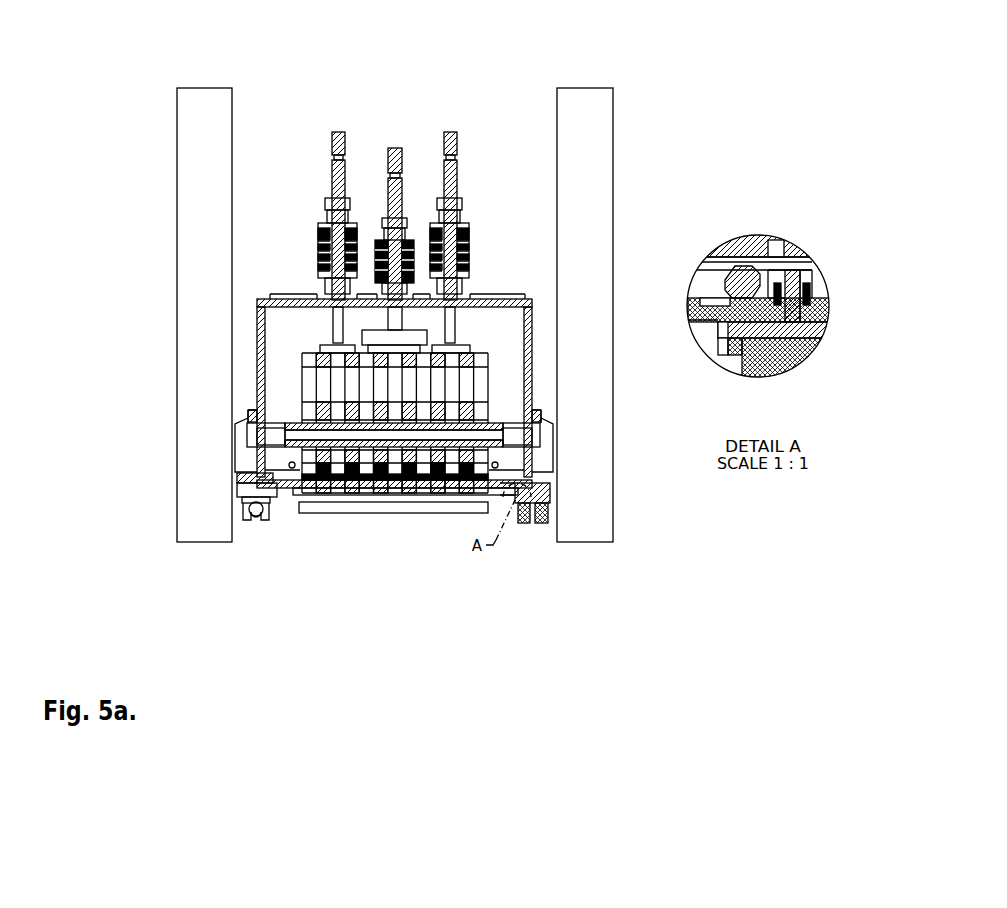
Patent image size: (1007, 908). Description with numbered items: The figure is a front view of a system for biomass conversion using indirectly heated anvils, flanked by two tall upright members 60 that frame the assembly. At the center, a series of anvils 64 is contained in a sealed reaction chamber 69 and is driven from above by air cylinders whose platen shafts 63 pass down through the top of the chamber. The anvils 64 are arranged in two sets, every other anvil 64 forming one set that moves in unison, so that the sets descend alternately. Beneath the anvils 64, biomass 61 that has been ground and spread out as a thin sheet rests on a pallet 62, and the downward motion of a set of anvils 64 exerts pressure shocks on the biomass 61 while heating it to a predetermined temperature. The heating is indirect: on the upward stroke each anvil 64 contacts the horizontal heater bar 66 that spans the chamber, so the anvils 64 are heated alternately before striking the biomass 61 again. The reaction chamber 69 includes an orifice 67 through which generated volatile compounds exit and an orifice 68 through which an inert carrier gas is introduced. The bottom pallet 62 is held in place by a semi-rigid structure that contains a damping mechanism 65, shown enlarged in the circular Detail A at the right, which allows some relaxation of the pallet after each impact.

The support column 60 is at (610, 170).
The biomass 61 is at (297, 493).
The pallet 62 is at (373, 507).
The platen shafts 63 is at (332, 132).
The anvils 64 is at (480, 355).
The damping mechanism 65 is at (818, 335).
The heater bar 66 is at (297, 417).
The orifice 67 is at (485, 298).
The orifice 68 is at (238, 488).
The sealed reaction chamber 69 is at (267, 300).